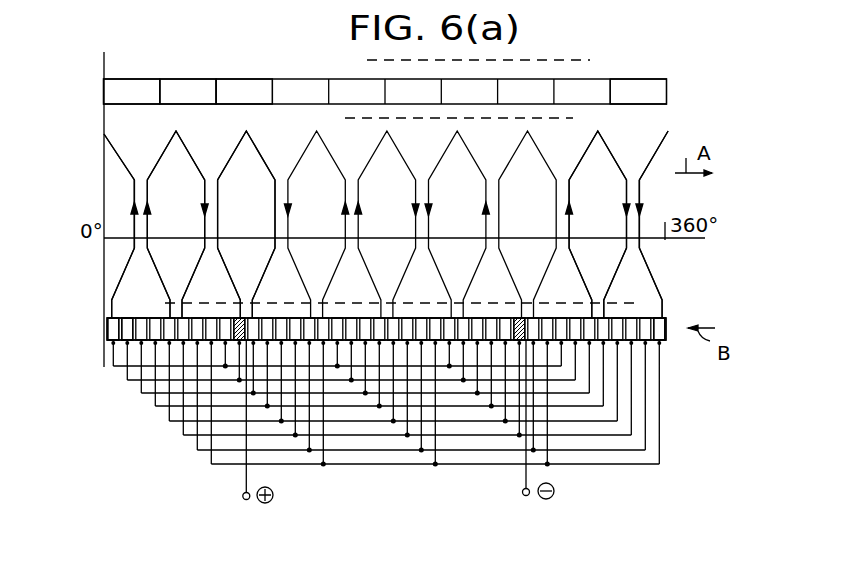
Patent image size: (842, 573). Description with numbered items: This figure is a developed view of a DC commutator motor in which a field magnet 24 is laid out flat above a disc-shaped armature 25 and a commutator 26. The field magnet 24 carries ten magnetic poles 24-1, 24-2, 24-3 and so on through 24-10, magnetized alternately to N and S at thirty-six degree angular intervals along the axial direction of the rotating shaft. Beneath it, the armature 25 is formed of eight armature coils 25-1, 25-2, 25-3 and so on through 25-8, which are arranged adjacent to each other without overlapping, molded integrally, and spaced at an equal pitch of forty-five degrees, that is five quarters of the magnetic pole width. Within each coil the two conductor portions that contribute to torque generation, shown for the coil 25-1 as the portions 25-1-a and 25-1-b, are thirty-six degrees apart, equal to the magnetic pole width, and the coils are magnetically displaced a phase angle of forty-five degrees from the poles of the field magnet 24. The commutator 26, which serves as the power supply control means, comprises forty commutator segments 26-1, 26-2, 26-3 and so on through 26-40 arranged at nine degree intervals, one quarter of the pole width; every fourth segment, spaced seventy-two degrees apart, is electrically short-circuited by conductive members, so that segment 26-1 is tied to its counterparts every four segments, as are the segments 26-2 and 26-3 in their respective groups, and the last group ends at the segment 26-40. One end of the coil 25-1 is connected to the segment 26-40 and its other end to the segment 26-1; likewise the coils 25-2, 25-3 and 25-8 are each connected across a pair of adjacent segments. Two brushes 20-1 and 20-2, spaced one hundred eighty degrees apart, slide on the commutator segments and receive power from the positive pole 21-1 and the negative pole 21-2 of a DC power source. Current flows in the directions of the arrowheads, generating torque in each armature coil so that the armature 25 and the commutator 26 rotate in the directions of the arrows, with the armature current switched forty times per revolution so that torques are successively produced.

The field magnet 24 is at (668, 90).
The magnetic pole 24-1 is at (117, 79).
The magnetic pole 24-2 is at (182, 79).
The magnetic pole 24-3 is at (256, 80).
The magnetic pole 24-10 is at (618, 82).
The armature 25 is at (738, 305).
The armature coil 25-1 is at (109, 141).
The armature coil 25-2 is at (182, 141).
The armature coil 25-3 is at (250, 141).
The armature coil 25-8 is at (604, 139).
The conductor portion 25-1-a is at (638, 192).
The conductor portion 25-1-b is at (134, 186).
The commutator 26 is at (667, 341).
The commutator segment 26-1 is at (108, 330).
The commutator segment 26-2 is at (110, 323).
The commutator segment 26-3 is at (147, 317).
The commutator segment 26-40 is at (664, 325).
The brush 20-1 is at (258, 318).
The brush 20-2 is at (536, 318).
The positive pole 21-1 is at (241, 499).
The negative pole 21-2 is at (522, 497).